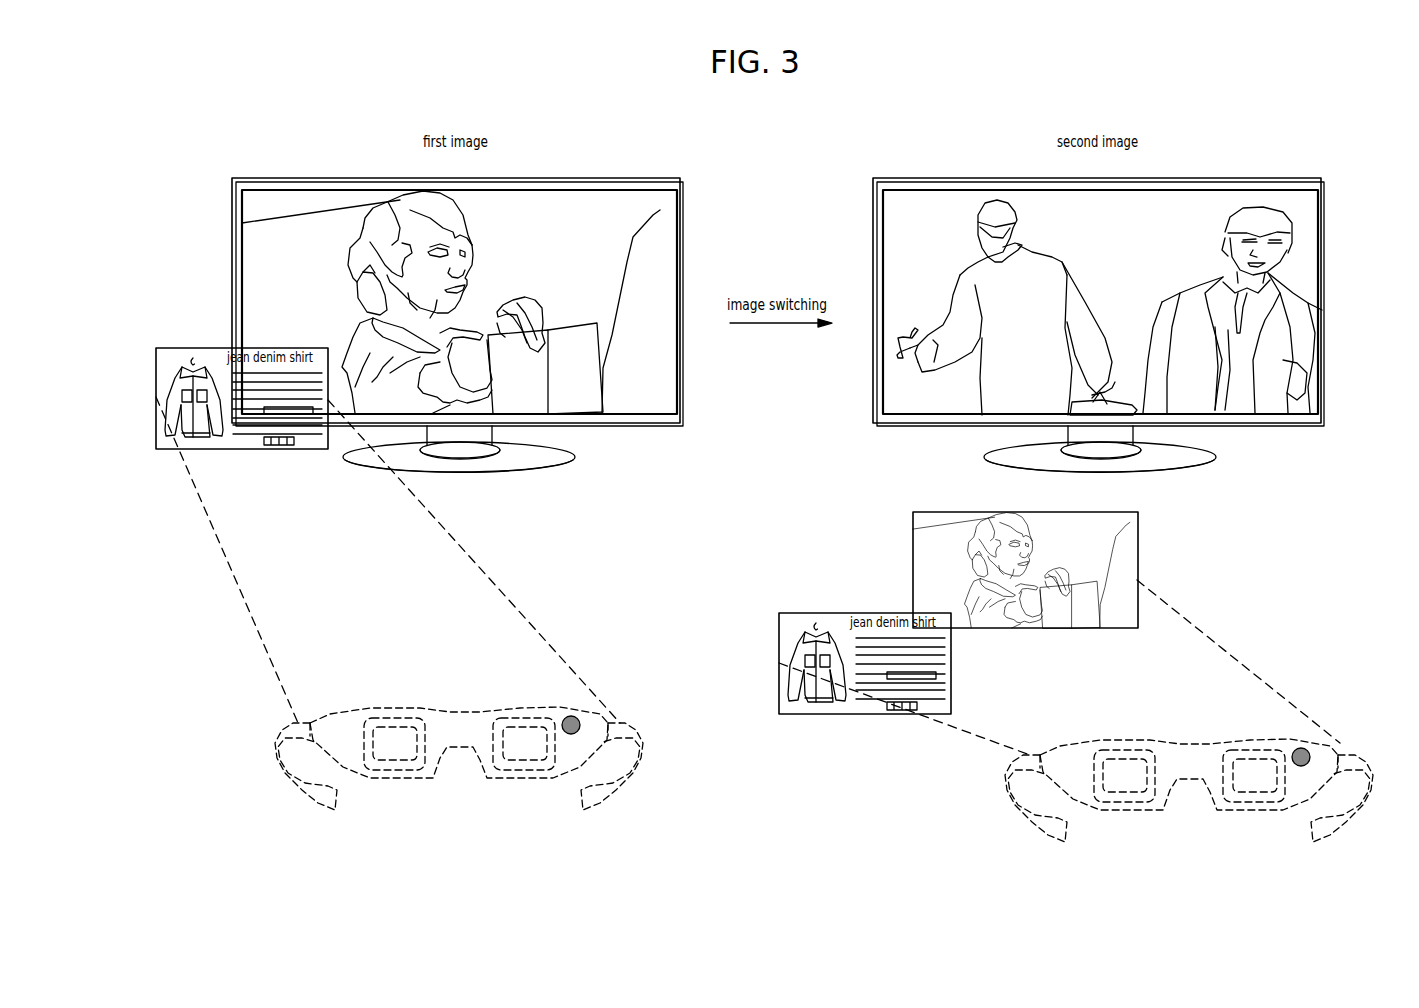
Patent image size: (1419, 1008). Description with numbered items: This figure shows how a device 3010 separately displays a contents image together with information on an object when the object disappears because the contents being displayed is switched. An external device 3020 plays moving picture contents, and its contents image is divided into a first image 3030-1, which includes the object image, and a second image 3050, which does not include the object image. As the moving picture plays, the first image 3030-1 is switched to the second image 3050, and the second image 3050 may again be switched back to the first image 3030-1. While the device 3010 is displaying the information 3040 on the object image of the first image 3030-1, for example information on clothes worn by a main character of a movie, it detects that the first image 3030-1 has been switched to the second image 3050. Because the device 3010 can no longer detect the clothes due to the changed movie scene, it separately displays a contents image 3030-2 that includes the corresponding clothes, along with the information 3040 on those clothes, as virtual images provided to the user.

The device 3010 is at (623, 785).
The external device 3020 is at (593, 178).
The first image 3030-1 is at (660, 211).
The contents image 3030-2 is at (918, 553).
The information on the object image 3040 is at (172, 353).
The second image 3050 is at (1283, 320).